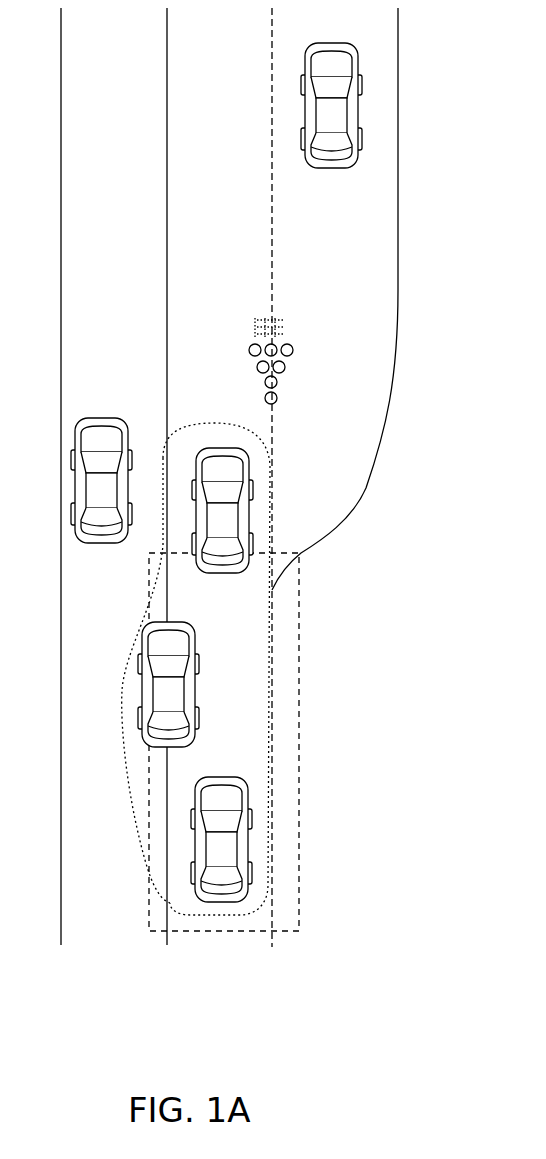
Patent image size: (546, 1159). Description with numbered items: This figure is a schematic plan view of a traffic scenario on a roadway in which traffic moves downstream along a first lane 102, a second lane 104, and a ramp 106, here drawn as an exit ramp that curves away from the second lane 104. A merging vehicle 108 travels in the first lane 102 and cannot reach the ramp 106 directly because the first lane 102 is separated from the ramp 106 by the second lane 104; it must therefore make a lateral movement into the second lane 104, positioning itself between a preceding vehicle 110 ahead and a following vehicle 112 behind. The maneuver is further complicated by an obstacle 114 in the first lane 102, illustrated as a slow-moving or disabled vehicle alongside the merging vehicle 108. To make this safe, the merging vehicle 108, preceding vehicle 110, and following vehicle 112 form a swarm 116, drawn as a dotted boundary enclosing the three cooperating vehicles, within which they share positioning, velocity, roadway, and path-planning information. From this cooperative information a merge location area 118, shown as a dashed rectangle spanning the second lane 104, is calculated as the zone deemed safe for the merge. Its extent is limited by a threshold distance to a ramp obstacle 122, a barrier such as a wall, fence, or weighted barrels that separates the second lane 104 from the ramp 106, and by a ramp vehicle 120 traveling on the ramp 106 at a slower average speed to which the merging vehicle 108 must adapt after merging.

The first lane 102 is at (167, 973).
The second lane 104 is at (272, 973).
The ramp 106 is at (387, 747).
The merging vehicle 108 is at (140, 690).
The preceding vehicle 110 is at (250, 515).
The following vehicle 112 is at (193, 838).
The obstacle 114 is at (72, 442).
The swarm 116 is at (123, 643).
The merge location area 118 is at (303, 652).
The ramp vehicle 120 is at (303, 114).
The ramp obstacle 122 is at (290, 367).